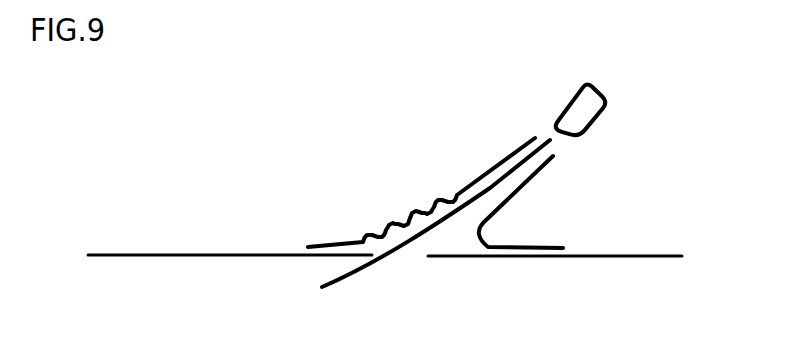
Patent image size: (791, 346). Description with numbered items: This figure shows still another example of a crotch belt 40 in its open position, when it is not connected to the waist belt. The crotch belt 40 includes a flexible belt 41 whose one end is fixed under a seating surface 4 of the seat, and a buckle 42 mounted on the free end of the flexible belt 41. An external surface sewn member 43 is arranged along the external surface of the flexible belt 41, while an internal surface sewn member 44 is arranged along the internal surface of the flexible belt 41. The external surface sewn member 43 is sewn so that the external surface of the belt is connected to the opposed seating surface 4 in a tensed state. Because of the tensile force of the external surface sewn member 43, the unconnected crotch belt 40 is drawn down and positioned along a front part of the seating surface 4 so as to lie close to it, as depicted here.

The seating surface 4 is at (158, 252).
The crotch belt 40 is at (502, 114).
The flexible belt 41 is at (440, 229).
The buckle 42 is at (584, 131).
The external surface sewn member 43 is at (517, 195).
The internal surface sewn member 44 is at (468, 183).